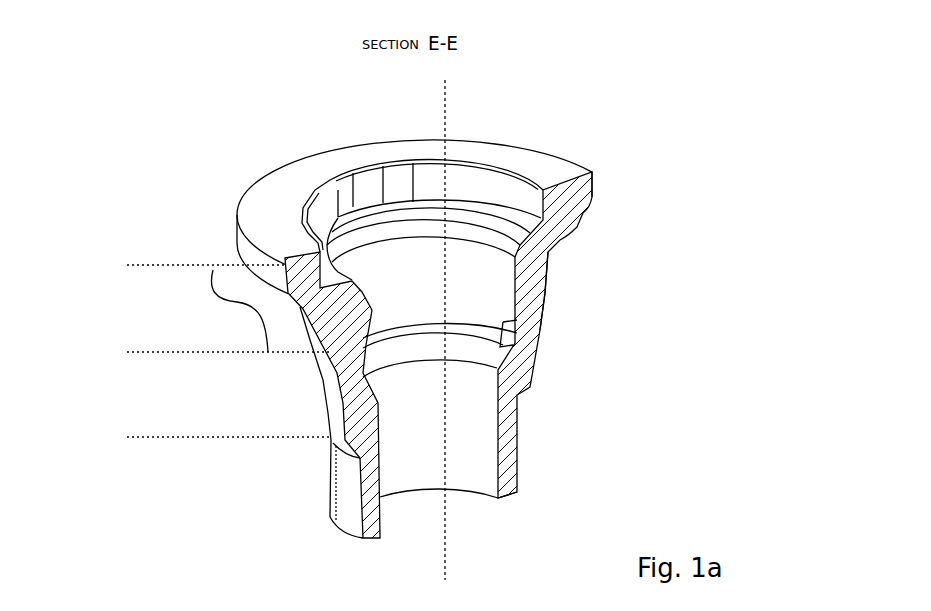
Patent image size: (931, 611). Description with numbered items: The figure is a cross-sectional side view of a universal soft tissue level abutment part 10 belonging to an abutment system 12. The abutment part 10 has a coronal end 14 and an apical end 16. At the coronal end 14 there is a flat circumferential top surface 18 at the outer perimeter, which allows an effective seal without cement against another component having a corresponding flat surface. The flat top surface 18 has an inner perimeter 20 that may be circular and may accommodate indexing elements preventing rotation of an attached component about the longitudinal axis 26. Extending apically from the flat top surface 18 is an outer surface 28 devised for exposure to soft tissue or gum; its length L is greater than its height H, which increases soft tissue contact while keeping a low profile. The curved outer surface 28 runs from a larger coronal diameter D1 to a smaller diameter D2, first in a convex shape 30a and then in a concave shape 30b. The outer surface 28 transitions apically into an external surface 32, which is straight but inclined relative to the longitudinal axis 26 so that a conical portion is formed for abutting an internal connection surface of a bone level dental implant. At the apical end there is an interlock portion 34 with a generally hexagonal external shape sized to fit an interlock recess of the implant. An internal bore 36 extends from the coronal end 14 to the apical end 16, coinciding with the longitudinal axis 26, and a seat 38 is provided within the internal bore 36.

The soft tissue level abutment part 10 is at (535, 404).
The abutment system 12 is at (648, 335).
The coronal end 14 is at (358, 333).
The flat circumferential top surface 18 is at (270, 187).
The apical end 16 is at (507, 495).
The inner perimeter 20 is at (330, 187).
The longitudinal axis 26 is at (444, 530).
The outer surface 28 is at (178, 308).
The height H is at (155, 265).
The convex shape 30a is at (588, 210).
The concave shape 30b is at (548, 253).
The external surface 32 is at (155, 352).
The interlock portion 34 is at (347, 503).
The internal bore 36 is at (406, 301).
The seat 38 is at (481, 331).
The larger coronal diameter D1 is at (593, 170).
The smaller coronal diameter D2 is at (545, 293).
The length L is at (213, 268).